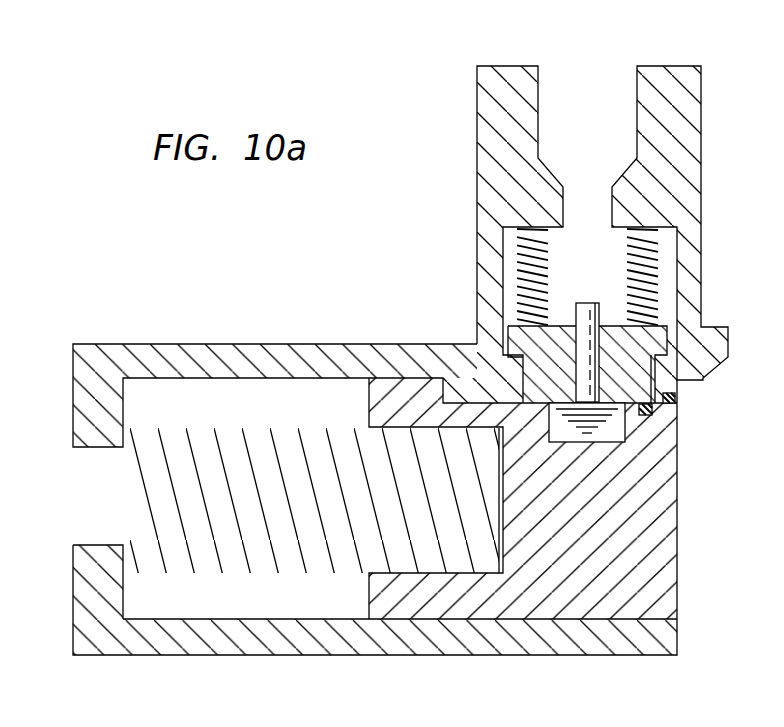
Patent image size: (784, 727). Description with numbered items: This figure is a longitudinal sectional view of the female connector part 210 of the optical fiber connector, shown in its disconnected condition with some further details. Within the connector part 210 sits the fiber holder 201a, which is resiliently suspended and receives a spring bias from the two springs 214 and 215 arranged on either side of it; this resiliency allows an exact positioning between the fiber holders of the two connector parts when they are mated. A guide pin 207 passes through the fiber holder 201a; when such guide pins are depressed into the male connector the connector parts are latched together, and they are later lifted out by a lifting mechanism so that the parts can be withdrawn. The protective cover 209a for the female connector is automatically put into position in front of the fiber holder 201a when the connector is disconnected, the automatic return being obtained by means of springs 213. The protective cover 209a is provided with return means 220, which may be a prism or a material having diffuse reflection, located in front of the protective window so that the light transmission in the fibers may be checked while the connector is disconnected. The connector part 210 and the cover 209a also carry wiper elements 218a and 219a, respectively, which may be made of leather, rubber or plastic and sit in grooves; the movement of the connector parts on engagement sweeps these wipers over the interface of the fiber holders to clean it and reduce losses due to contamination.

The connector part 210 is at (335, 343).
The protective cover 209a is at (642, 528).
The springs 213 is at (305, 540).
The return means 220 is at (605, 437).
The fiber holder 201a is at (665, 330).
The guide pins 207 is at (590, 357).
The spring 215 is at (538, 248).
The spring 214 is at (655, 253).
The wiper element 218a is at (669, 398).
The wiper element 219a is at (645, 410).